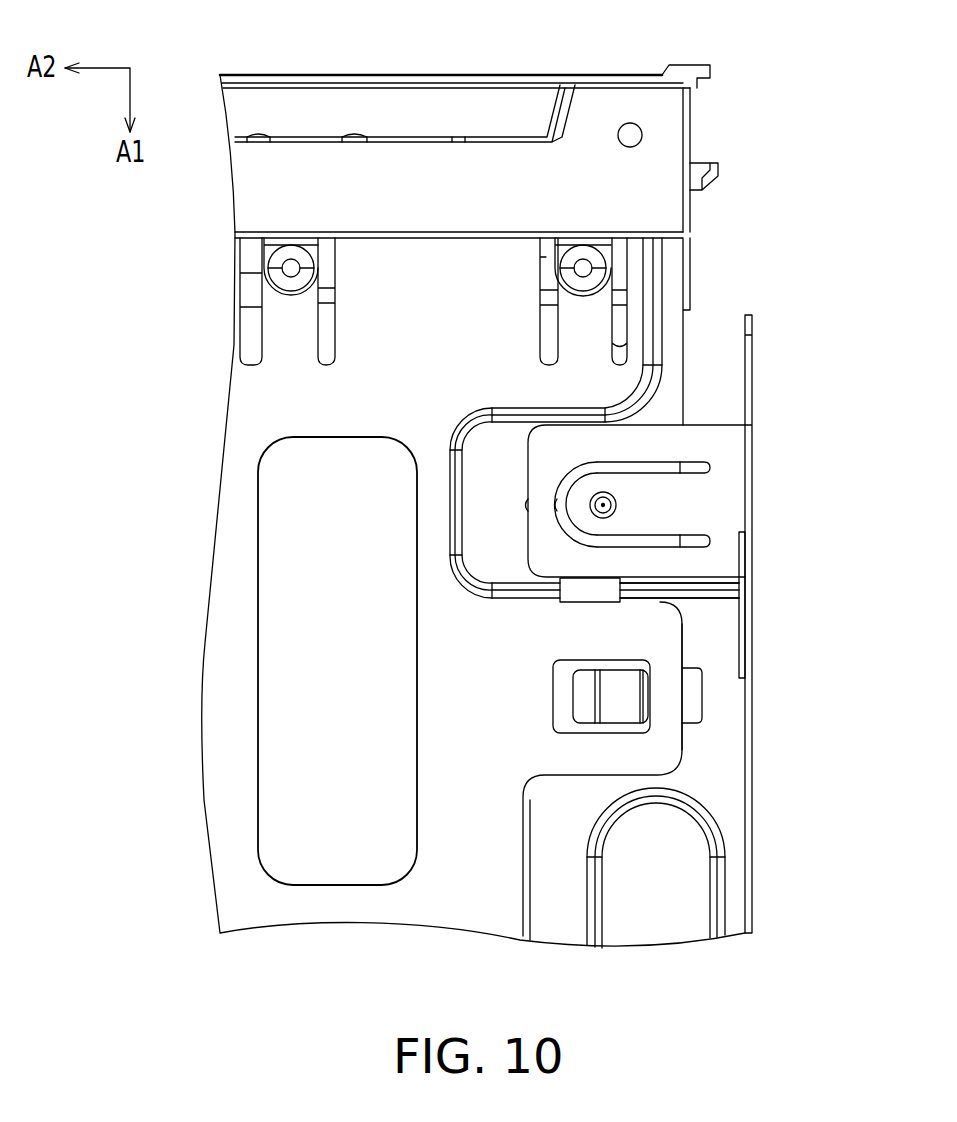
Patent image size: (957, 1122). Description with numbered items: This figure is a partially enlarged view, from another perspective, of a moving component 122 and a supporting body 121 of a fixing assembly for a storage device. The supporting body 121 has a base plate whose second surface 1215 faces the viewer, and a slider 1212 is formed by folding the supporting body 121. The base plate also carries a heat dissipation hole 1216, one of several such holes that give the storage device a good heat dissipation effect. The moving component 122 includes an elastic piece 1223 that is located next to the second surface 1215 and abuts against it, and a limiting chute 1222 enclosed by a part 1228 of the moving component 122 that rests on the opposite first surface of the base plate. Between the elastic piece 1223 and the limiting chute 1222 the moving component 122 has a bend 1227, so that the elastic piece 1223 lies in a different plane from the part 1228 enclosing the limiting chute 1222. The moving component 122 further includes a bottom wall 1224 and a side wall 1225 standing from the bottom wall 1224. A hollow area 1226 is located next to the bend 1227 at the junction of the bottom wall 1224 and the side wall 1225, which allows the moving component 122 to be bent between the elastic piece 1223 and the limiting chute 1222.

The heat dissipation hole 1216 is at (342, 497).
The second surface 1215 is at (490, 533).
The supporting body 121 is at (230, 753).
The moving component 122 is at (718, 785).
The elastic piece 1223 is at (636, 505).
The bend 1227 is at (693, 594).
The hollow area 1226 is at (740, 610).
The part enclosing the limiting chute 1228 is at (693, 643).
The slider 1212 is at (587, 695).
The limiting chute 1222 is at (703, 708).
The side wall 1225 is at (757, 883).
The bottom wall 1224 is at (560, 918).